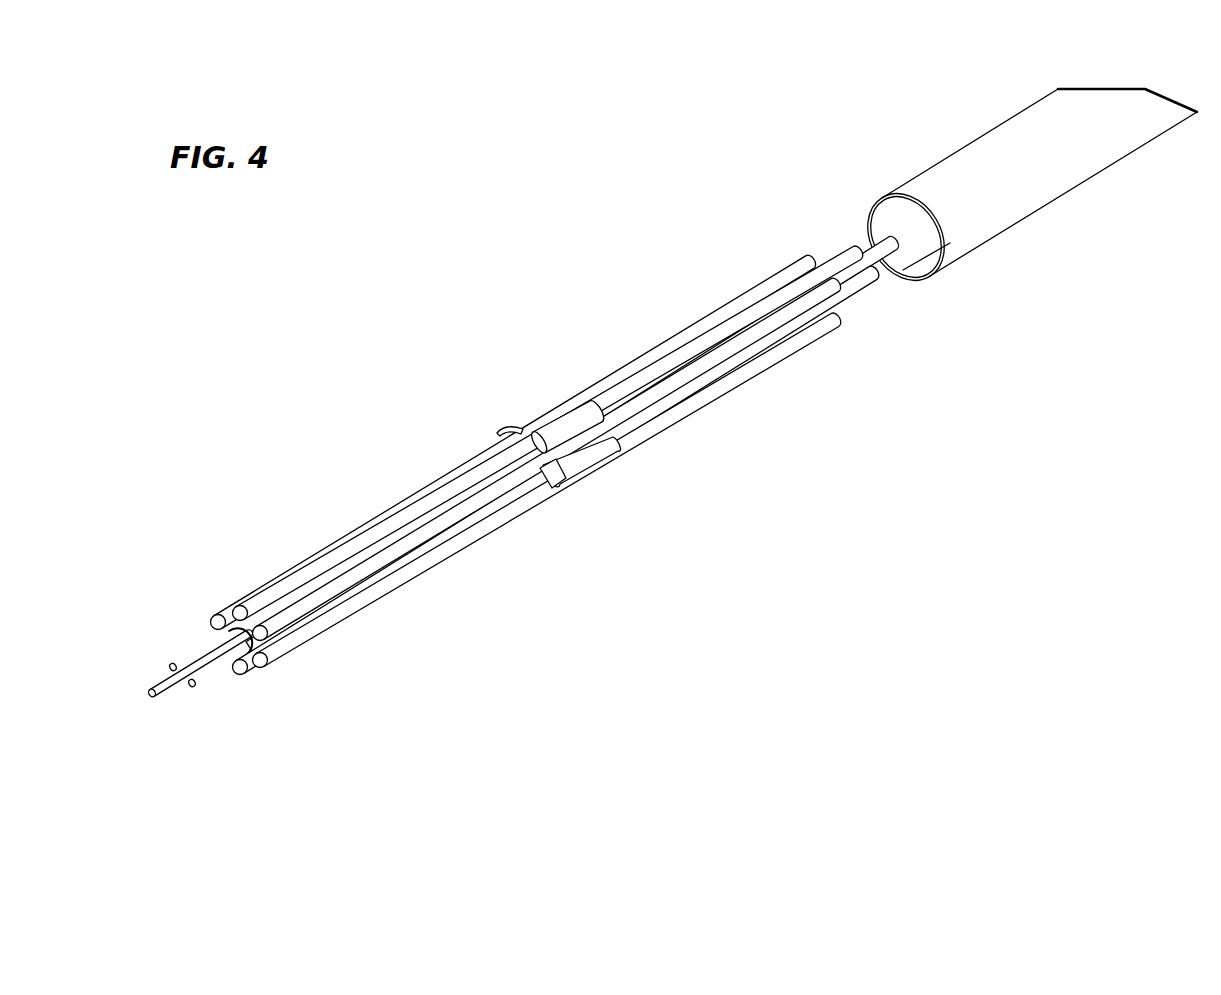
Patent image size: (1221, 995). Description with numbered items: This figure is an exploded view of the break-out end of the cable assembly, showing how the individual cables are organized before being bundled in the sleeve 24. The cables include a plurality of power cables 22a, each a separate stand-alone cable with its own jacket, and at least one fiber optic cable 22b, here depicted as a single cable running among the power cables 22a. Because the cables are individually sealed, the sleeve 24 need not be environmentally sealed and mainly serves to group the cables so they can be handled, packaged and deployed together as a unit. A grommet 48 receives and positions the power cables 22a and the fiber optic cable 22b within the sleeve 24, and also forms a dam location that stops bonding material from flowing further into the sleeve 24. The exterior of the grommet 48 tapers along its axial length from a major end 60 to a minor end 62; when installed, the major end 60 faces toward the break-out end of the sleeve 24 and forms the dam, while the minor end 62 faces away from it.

The power cable 22a is at (227, 607).
The fiber optic cable 22b is at (245, 642).
The sleeve 24 is at (1008, 208).
The grommet 48 is at (511, 403).
The major end 60 is at (553, 487).
The minor end 62 is at (613, 450).